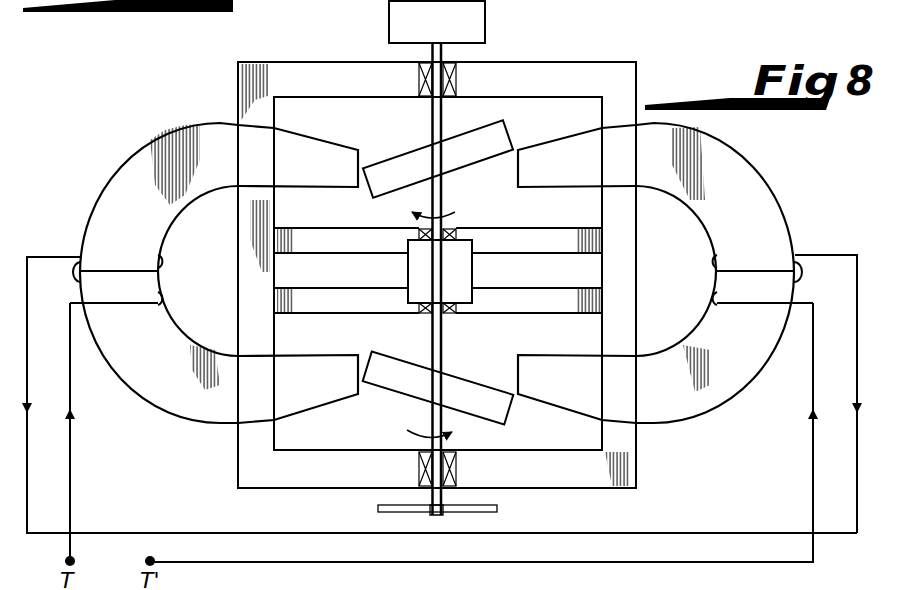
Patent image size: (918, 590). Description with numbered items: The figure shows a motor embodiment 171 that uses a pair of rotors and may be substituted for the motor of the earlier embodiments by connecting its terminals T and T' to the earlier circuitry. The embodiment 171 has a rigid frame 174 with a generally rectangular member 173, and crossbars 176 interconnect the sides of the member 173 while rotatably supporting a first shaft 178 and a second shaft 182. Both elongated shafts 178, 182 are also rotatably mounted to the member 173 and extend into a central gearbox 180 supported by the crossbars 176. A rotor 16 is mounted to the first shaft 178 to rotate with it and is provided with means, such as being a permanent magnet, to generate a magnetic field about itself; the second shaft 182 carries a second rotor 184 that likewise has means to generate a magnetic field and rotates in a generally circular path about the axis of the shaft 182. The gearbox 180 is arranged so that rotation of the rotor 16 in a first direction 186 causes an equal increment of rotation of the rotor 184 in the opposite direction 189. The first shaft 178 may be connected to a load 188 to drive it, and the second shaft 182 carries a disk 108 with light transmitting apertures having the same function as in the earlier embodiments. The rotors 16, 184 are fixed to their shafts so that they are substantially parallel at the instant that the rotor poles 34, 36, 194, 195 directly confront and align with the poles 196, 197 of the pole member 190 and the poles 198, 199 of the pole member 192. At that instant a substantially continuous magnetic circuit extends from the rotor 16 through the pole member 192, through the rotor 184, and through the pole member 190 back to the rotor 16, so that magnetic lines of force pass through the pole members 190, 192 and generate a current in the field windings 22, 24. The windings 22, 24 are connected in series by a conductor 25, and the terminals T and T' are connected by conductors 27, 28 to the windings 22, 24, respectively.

The motor embodiment 171 is at (652, 48).
The rectangular member 173 is at (596, 62).
The rigid frame 174 is at (356, 52).
The crossbars 176 is at (352, 250).
The first shaft 178 is at (443, 50).
The central gearbox 180 is at (472, 272).
The second shaft 182 is at (432, 500).
The second rotor 184 is at (460, 377).
The first direction 186 is at (455, 212).
The opposite direction 189 is at (458, 432).
The load 188 is at (487, 10).
The pole member 190 is at (110, 185).
The pole member 192 is at (748, 164).
The rotor pole 194 is at (365, 350).
The rotor pole 195 is at (512, 420).
The pole 196 is at (358, 150).
The pole 197 is at (370, 389).
The pole 198 is at (518, 178).
The pole 199 is at (518, 358).
The rotor 16 is at (425, 147).
The rotor pole 34 is at (375, 196).
The rotor pole 36 is at (505, 129).
The field winding 22 is at (172, 263).
The field winding 24 is at (705, 264).
The conductor 25 is at (813, 466).
The conductor 27 is at (70, 512).
The conductor 28 is at (857, 466).
The disk 108 is at (497, 511).